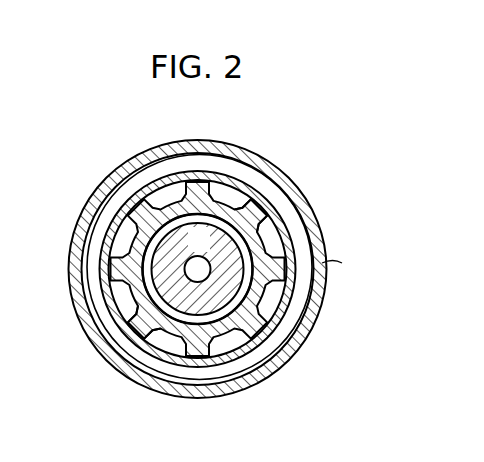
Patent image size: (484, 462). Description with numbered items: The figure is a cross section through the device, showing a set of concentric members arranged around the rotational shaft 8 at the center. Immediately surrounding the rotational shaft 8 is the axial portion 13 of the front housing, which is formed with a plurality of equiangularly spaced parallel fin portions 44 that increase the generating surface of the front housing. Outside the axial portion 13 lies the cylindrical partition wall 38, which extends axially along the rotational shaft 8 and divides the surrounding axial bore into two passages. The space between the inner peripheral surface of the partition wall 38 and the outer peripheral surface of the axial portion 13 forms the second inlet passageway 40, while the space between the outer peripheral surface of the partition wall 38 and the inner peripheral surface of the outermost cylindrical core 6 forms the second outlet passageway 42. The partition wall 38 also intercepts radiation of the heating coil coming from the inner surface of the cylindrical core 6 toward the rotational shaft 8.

The second outlet passageway 42 is at (201, 163).
The cylindrical partition wall 38 is at (293, 296).
The second inlet passageway 40 is at (272, 232).
The fin portions 44 is at (258, 214).
The cylindrical core 6 is at (340, 263).
The axial portion 13 is at (168, 333).
The rotational shaft 8 is at (207, 249).